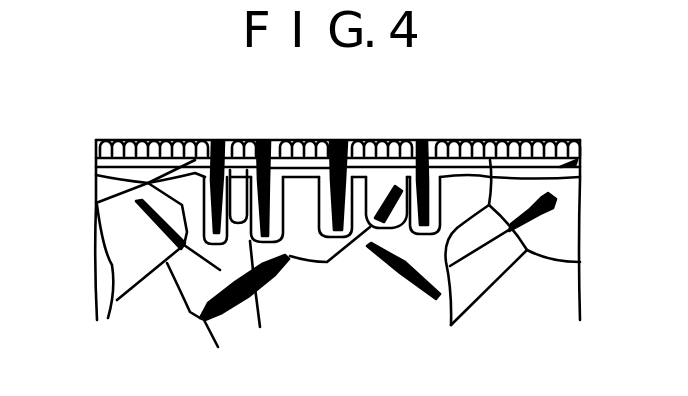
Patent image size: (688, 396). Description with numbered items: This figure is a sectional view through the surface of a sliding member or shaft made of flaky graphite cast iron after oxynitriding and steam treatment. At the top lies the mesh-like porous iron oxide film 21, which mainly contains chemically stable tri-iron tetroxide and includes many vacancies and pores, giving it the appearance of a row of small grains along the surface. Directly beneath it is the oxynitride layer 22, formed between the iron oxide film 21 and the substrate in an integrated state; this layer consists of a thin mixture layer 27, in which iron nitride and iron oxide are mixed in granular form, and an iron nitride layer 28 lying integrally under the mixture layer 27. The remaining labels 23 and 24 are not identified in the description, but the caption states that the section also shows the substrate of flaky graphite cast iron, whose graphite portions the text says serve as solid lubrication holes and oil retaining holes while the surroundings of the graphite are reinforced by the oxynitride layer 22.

The iron oxide film 21 is at (540, 142).
The oxynitride layer 22 is at (582, 161).
The void 23 is at (553, 207).
The substrate body 24 is at (573, 285).
The mixture layer 27 is at (137, 142).
The iron nitride layer 28 is at (98, 169).